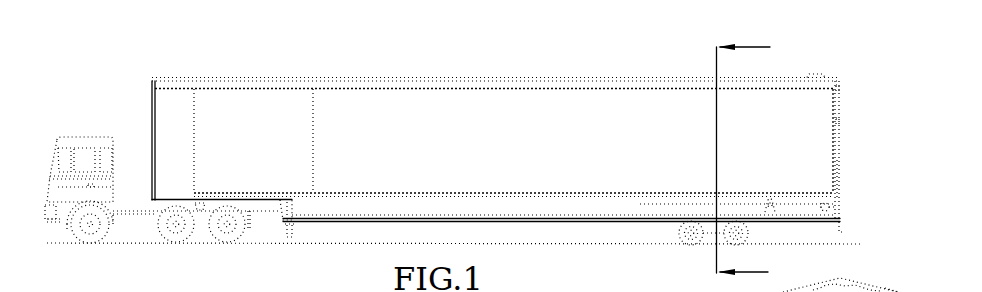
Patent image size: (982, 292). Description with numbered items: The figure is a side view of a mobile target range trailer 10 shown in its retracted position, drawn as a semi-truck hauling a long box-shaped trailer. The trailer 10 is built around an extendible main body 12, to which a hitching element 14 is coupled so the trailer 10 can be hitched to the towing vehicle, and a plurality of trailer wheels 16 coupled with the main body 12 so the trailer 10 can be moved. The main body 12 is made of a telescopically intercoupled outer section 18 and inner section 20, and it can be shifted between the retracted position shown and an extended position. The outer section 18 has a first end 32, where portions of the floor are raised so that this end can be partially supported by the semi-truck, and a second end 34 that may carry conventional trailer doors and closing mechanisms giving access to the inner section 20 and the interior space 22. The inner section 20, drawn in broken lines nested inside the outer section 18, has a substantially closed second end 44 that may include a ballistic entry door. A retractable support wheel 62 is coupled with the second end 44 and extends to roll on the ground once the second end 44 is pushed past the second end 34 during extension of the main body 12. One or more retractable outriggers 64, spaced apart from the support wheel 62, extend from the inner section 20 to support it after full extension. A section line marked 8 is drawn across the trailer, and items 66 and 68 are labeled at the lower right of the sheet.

The section line 8- 8 is at (731, 163).
The mobile target range trailer 10 is at (156, 56).
The extendible main body 12 is at (314, 52).
The hitching element 14 is at (201, 210).
The trailer wheels 16 is at (728, 239).
The outer section 18 is at (166, 118).
The inner section 20 is at (808, 157).
The interior space 22 is at (525, 110).
The first end of the outer section 32 is at (156, 87).
The second end of the outer section 34 is at (841, 90).
The second end of the inner section 44 is at (836, 122).
The retractable support wheel 62 is at (842, 208).
The retractable outriggers 64 is at (284, 229).
The sensor 66 is at (839, 291).
The sensor 68 is at (892, 291).